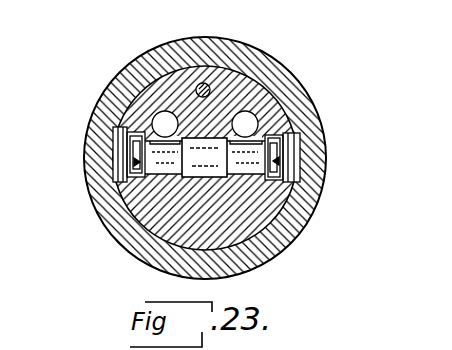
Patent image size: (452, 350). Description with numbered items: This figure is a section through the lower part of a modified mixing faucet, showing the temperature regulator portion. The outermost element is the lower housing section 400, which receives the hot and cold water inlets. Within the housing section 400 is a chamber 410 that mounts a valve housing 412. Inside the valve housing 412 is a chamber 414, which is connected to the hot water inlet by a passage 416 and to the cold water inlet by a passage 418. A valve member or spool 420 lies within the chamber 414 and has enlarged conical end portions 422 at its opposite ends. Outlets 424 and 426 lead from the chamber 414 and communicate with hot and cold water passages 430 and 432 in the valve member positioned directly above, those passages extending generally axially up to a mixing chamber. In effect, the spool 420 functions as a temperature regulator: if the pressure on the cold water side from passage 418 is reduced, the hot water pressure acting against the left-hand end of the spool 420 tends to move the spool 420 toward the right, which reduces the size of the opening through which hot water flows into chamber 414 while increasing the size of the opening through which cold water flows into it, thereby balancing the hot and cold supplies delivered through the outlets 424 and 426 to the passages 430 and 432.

The lower housing section 400 is at (207, 15).
The chamber 410 is at (240, 100).
The valve housing 412 is at (255, 227).
The chamber 414 is at (170, 173).
The passage 416 is at (160, 128).
The passage 418 is at (288, 130).
The valve member or spool 420 is at (205, 177).
The enlarged conical end portions 422 is at (138, 161).
The outlet 424 is at (163, 140).
The outlet 426 is at (268, 115).
The hot water passage 430 is at (160, 118).
The cold water passage 432 is at (243, 112).